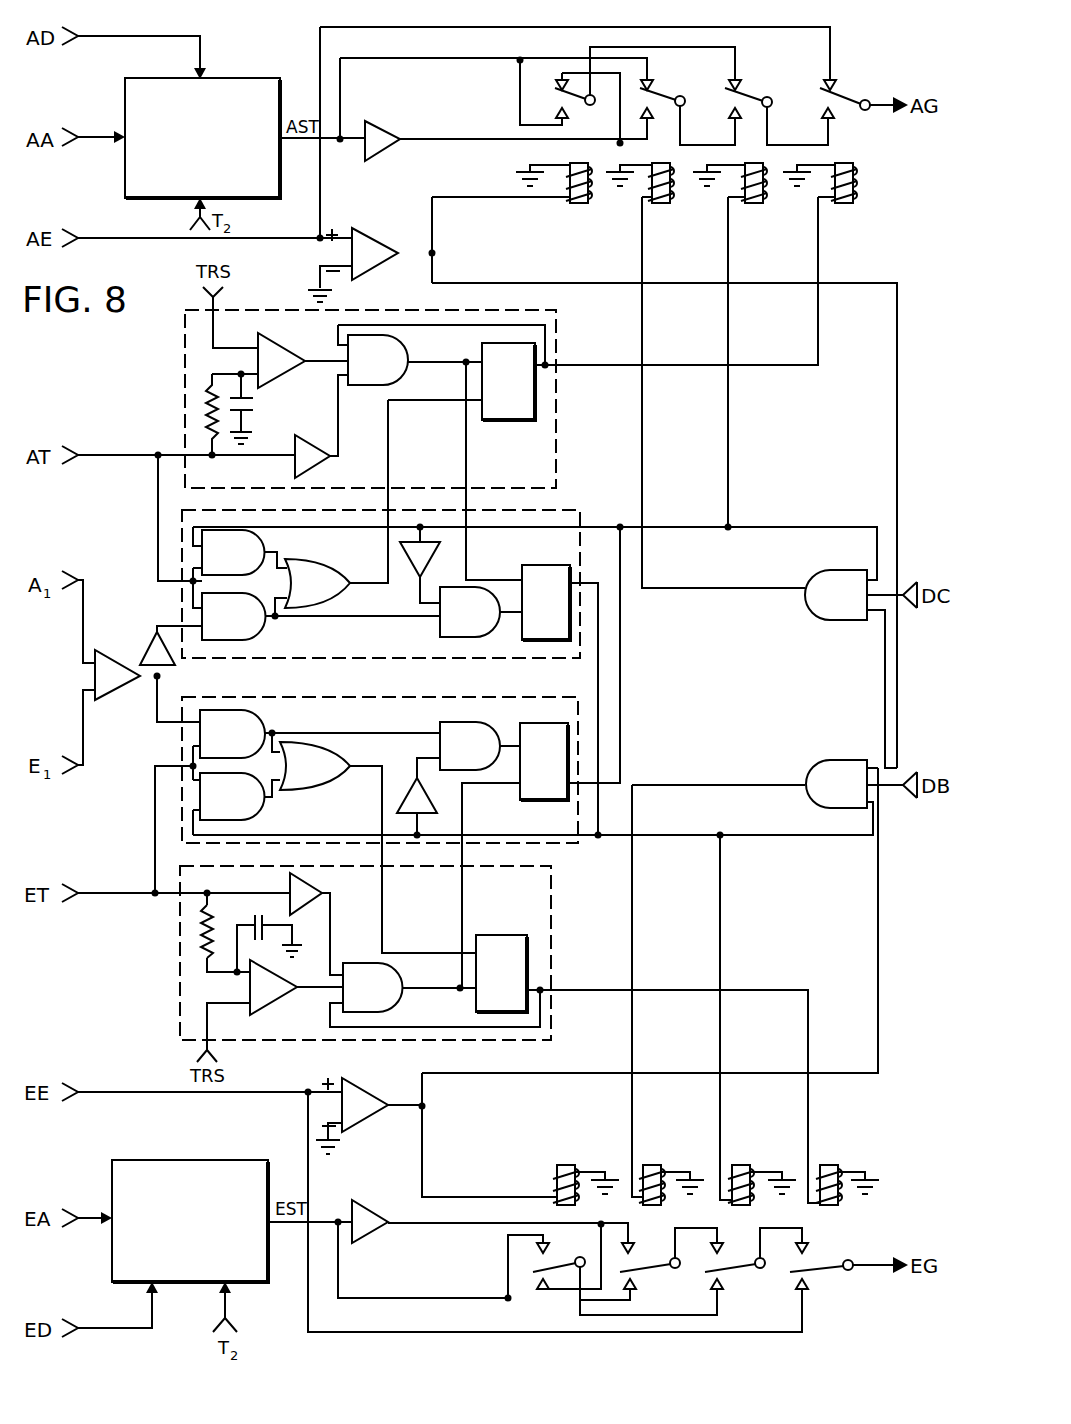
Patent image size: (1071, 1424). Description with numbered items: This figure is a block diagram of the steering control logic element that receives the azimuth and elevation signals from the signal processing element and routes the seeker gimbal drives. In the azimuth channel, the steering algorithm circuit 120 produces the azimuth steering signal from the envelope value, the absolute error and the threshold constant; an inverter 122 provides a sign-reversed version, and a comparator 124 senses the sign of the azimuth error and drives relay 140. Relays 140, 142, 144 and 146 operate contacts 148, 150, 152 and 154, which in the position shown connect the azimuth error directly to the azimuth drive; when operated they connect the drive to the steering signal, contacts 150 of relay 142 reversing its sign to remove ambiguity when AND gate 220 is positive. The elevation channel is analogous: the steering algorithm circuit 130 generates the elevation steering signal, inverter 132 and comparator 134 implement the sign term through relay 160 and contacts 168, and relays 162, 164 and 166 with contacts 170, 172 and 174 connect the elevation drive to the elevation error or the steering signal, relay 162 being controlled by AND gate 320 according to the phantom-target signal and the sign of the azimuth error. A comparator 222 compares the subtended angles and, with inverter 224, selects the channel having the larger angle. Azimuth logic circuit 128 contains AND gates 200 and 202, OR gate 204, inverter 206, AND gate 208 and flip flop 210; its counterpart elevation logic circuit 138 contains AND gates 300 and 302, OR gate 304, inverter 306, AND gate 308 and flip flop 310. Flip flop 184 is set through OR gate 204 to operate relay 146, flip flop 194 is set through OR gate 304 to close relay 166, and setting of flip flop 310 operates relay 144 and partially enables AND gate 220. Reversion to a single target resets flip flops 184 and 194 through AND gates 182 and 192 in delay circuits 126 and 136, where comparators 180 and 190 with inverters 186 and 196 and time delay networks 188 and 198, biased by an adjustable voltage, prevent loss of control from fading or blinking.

The azimuth channel steering algorithm circuit 120 is at (248, 77).
The inverter 122 is at (395, 105).
The comparator 124 is at (385, 229).
The time delay circuit 126 is at (556, 450).
The azimuth logic circuit 128 is at (405, 660).
The elevation channel steering algorithm circuit 130 is at (201, 1160).
The inverter 132 is at (377, 1243).
The comparator 134 is at (383, 1067).
The time delay circuit 136 is at (551, 915).
The elevation logic circuit 138 is at (482, 697).
The relay 140 is at (575, 203).
The relay 142 is at (664, 203).
The relay 144 is at (760, 203).
The relay 146 is at (846, 203).
The relay contacts 148 is at (557, 70).
The relay contacts 150 is at (667, 78).
The relay contacts 152 is at (752, 80).
The relay contacts 154 is at (855, 86).
The relay 160 is at (566, 1165).
The relay 162 is at (651, 1165).
The relay 164 is at (751, 1150).
The relay 166 is at (841, 1150).
The relay contacts 168 is at (530, 1270).
The relay contacts 170 is at (659, 1278).
The relay contacts 172 is at (742, 1278).
The relay contacts 174 is at (832, 1278).
The comparator 180 is at (303, 333).
The AND gate 182 is at (378, 360).
The flip flop 184 is at (505, 425).
The inverter 186 is at (298, 437).
The time delay network 188 is at (186, 413).
The comparator 190 is at (280, 1001).
The AND gate 192 is at (372, 987).
The flip flop 194 is at (510, 935).
The inverter 196 is at (317, 878).
The time delay network 198 is at (186, 935).
The AND gate 200 is at (233, 552).
The AND gate 202 is at (233, 616).
The OR gate 204 is at (317, 583).
The inverter 206 is at (405, 570).
The AND gate 208 is at (470, 612).
The flip flop 210 is at (540, 565).
The AND gate 220 is at (836, 595).
The comparator 222 is at (118, 692).
The inverter 224 is at (142, 652).
The AND gate 300 is at (232, 796).
The AND gate 302 is at (232, 734).
The OR gate 304 is at (315, 766).
The inverter 306 is at (396, 795).
The AND gate 308 is at (470, 746).
The flip flop 310 is at (530, 801).
The AND gate 320 is at (836, 784).